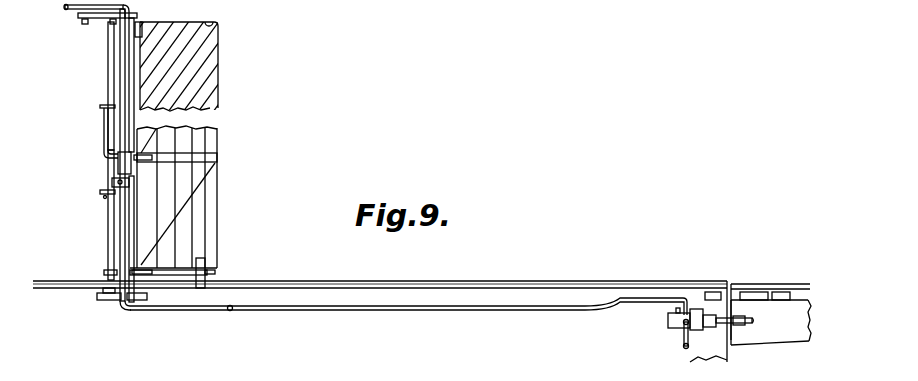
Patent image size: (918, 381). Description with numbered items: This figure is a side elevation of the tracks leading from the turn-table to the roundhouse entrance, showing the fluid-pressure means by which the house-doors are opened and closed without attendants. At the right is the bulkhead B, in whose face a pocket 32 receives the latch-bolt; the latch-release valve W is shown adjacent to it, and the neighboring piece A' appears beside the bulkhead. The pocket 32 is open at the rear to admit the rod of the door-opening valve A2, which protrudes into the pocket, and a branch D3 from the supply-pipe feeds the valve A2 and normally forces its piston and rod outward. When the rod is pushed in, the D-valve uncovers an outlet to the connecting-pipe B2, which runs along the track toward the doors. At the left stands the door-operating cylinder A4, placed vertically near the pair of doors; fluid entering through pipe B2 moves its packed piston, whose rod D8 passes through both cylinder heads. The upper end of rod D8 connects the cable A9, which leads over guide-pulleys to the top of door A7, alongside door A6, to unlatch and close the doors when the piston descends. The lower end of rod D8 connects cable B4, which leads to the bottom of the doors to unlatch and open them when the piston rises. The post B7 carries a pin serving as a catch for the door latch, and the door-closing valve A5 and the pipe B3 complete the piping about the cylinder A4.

The pipe B3 is at (72, 9).
The rod D8 is at (108, 68).
The cable A9 is at (214, 28).
The door A7 is at (218, 82).
The door-operating cylinder A4 is at (120, 174).
The door-closing valve A5 is at (103, 178).
The door A6 is at (216, 182).
The cable B4 is at (108, 242).
The post B7 is at (204, 262).
The connecting-pipe B2 is at (467, 311).
The door-opening valve A2 is at (672, 323).
The branch D3 is at (683, 337).
The pocket 32 is at (719, 327).
The latch-release valve W is at (748, 316).
The bulkhead B is at (722, 352).
The block A' is at (771, 336).